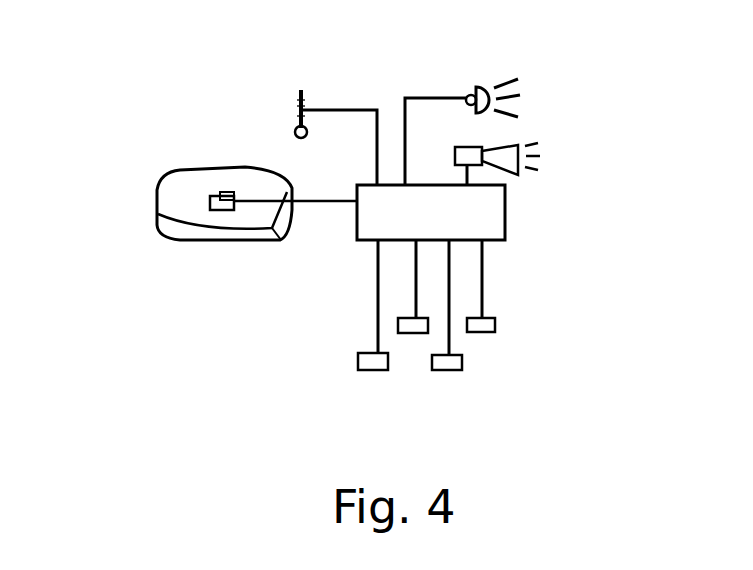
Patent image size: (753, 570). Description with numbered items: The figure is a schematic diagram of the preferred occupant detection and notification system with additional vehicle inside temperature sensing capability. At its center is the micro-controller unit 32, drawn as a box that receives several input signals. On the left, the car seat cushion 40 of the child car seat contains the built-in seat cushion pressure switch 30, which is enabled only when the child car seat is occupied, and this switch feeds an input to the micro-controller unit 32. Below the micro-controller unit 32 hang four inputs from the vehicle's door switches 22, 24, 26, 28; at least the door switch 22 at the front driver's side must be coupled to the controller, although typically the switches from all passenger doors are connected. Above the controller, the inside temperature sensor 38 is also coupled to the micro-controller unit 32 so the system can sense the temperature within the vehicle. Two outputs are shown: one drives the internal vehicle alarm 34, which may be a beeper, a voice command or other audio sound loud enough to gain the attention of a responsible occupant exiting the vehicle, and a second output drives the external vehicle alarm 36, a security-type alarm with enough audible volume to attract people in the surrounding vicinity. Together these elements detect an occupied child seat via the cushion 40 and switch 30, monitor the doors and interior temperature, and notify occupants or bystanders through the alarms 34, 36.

The door switch 22 is at (372, 372).
The door switch 24 is at (407, 335).
The door switch 26 is at (462, 367).
The door switch 28 is at (493, 327).
The seat cushion pressure switch 30 is at (215, 213).
The micro-controller unit 32 is at (507, 215).
The internal vehicle alarm 34 is at (472, 88).
The external vehicle alarm 36 is at (520, 143).
The inside temperature sensor 38 is at (295, 100).
The car seat cushion 40 is at (150, 195).